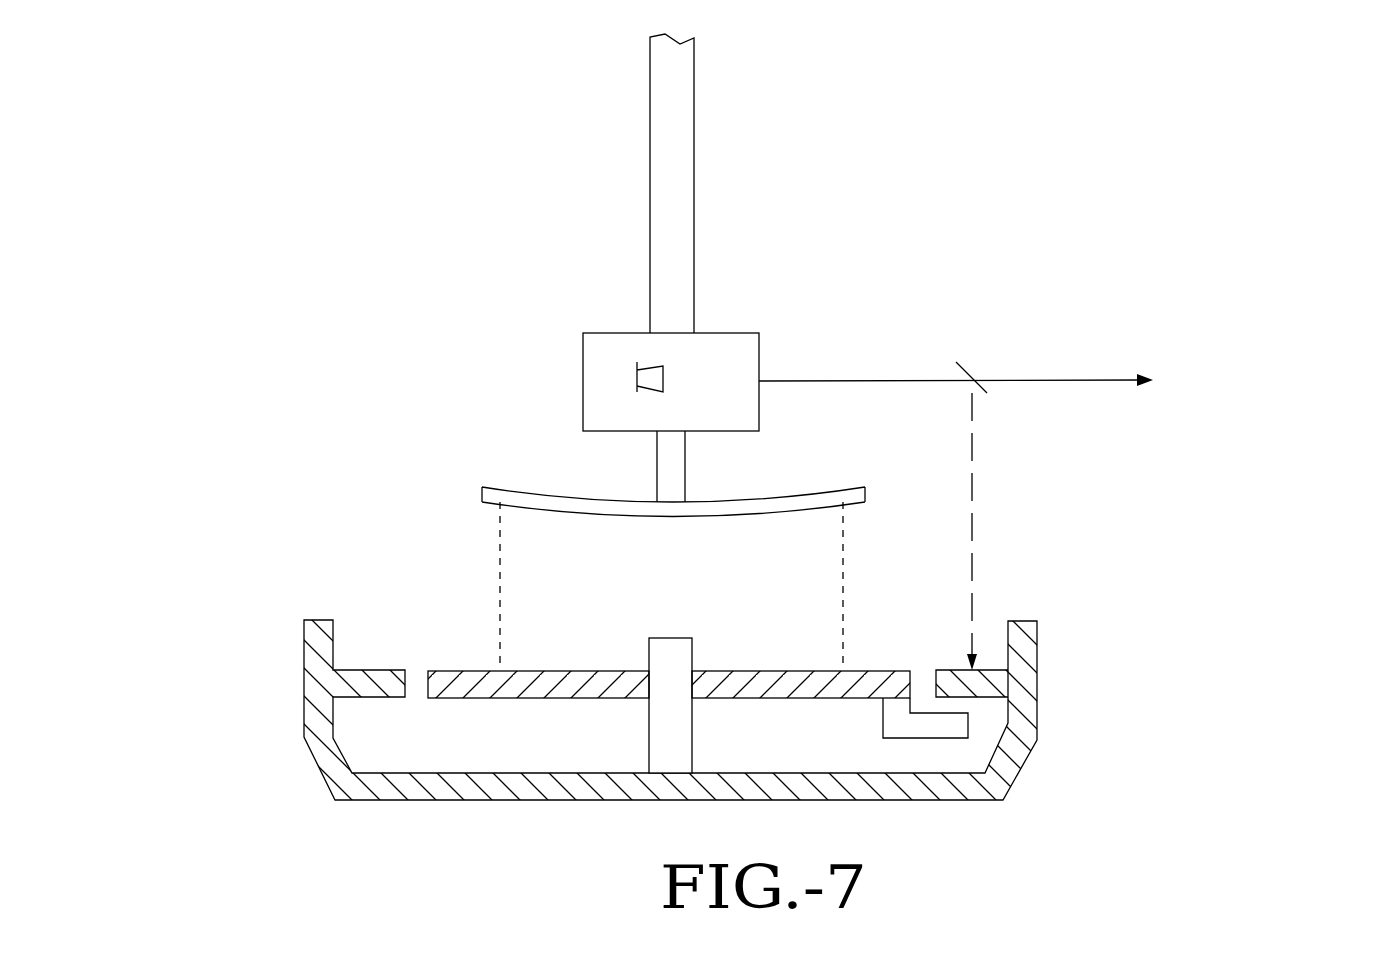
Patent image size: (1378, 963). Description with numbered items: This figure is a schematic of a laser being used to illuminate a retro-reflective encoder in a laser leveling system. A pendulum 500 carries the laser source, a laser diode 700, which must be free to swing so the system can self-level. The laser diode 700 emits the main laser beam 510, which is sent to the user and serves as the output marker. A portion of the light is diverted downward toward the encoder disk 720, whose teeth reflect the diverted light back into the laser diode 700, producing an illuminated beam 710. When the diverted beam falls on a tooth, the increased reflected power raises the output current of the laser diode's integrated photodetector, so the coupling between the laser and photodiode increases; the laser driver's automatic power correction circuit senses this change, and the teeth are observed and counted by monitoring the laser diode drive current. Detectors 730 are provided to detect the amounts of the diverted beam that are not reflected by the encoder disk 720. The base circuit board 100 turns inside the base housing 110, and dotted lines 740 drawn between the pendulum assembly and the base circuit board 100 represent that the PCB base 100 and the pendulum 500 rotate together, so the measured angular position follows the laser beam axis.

The pendulum 500 is at (657, 205).
The laser diode 700 is at (658, 367).
The laser beam 510 is at (1053, 380).
The dotted lines 740 is at (830, 566).
The illuminated beam 710 is at (973, 522).
The encoder disk 720 is at (992, 670).
The detectors 730 is at (950, 730).
The base housing 110 is at (328, 778).
The base circuit board 100 is at (510, 698).